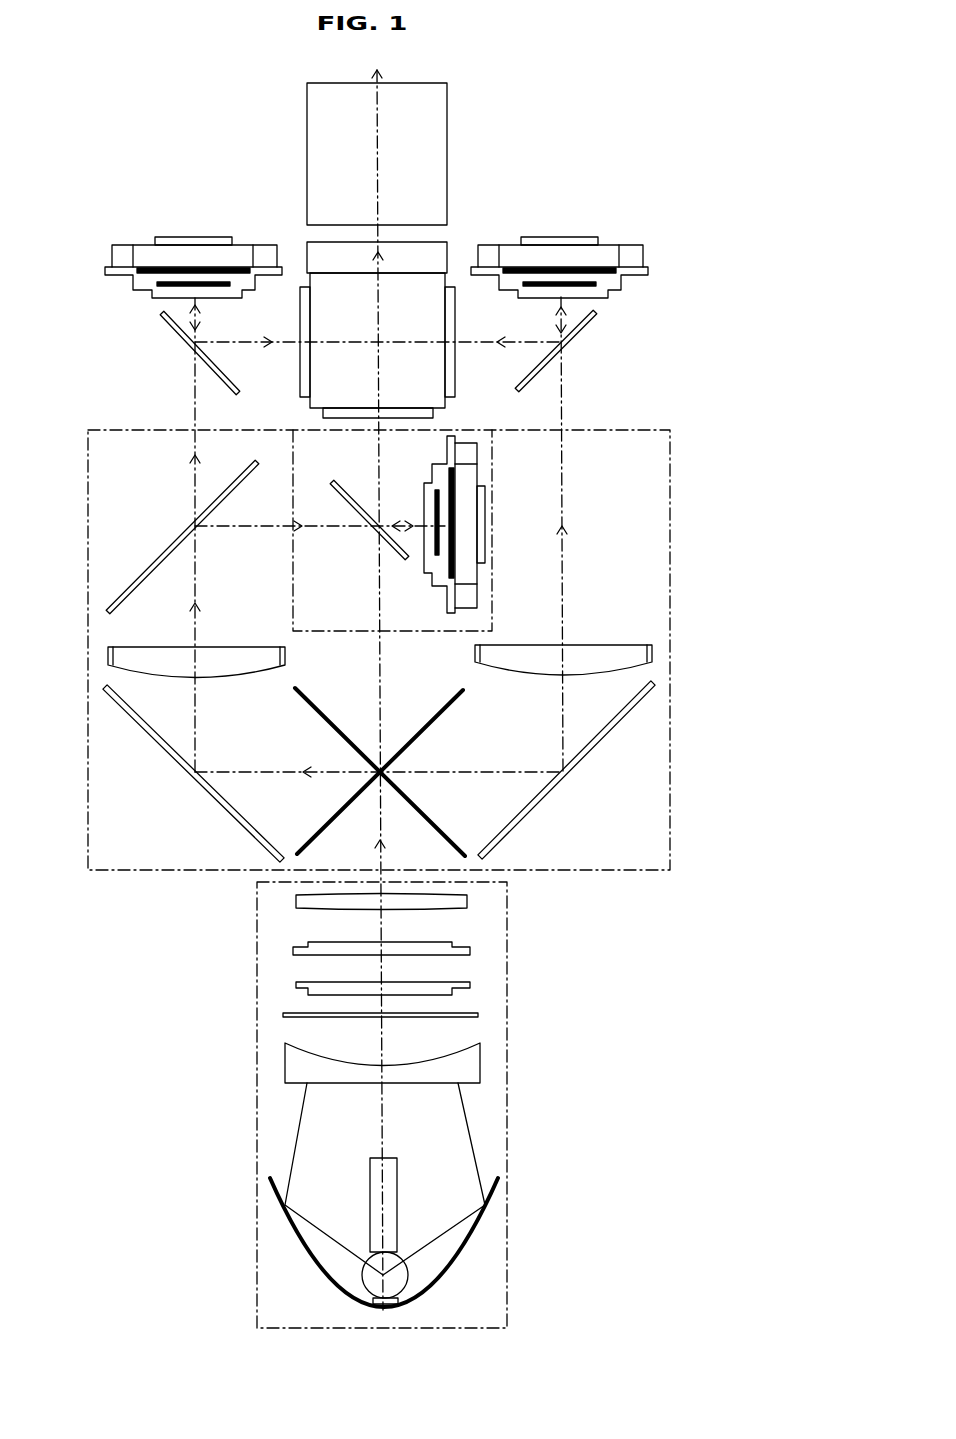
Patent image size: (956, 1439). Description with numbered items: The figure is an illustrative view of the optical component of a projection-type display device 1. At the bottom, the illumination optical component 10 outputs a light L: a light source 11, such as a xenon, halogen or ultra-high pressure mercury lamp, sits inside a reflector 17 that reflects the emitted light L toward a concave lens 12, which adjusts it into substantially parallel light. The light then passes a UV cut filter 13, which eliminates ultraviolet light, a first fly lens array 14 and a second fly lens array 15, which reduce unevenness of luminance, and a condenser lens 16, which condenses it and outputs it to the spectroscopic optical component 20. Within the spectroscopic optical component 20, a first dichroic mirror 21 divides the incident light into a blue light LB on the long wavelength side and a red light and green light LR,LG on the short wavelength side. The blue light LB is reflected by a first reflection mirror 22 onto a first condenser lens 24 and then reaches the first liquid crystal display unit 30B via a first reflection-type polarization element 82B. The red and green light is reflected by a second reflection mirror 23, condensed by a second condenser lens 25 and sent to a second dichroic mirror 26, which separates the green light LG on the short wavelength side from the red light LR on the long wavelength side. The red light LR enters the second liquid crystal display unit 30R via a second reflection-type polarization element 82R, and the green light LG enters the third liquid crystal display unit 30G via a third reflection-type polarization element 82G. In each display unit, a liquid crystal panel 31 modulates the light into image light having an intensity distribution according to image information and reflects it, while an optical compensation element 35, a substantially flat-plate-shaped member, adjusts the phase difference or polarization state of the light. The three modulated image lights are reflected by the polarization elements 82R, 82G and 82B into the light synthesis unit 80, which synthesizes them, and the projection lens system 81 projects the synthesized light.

The projection-type display device 1 is at (97, 126).
The illumination optical component 10 is at (507, 1060).
The light source 11 is at (408, 1270).
The concave lens 12 is at (285, 1065).
The UV cut filter 13 is at (283, 1015).
The first fly lens array 14 is at (296, 989).
The second fly lens array 15 is at (293, 950).
The condenser lens 16 is at (296, 900).
The reflector 17 is at (300, 1232).
The spectroscopic optical component 20 is at (670, 837).
The first dichroic mirror 21 is at (466, 857).
The first reflection mirror 22 is at (645, 700).
The second reflection mirror 23 is at (133, 718).
The first condenser lens 24 is at (653, 650).
The second condenser lens 25 is at (108, 657).
The second dichroic mirror 26 is at (110, 606).
The second liquid crystal display unit 30R is at (244, 236).
The third liquid crystal display unit 30G is at (486, 454).
The first liquid crystal display unit 30B is at (656, 260).
The liquid crystal panel 31 is at (140, 269).
The optical compensation element 35 is at (160, 287).
The light synthesis unit 80 is at (442, 243).
The projection lens system 81 is at (447, 165).
The second reflection-type polarization element 82R is at (168, 332).
The third reflection-type polarization element 82G is at (373, 536).
The first reflection-type polarization element 82B is at (577, 333).
The red light LR is at (193, 400).
The green light LG is at (233, 527).
The blue light LB is at (563, 590).
The red light and green light LR,LG is at (195, 740).
The light L is at (383, 1115).